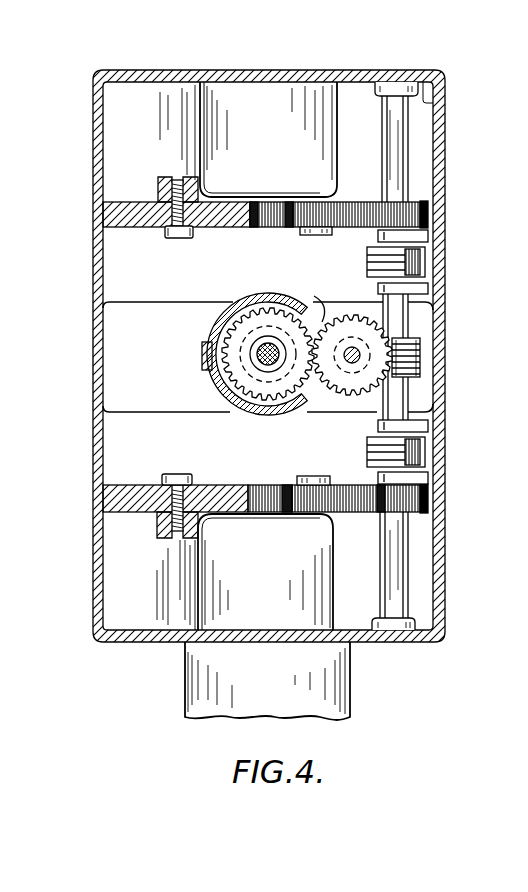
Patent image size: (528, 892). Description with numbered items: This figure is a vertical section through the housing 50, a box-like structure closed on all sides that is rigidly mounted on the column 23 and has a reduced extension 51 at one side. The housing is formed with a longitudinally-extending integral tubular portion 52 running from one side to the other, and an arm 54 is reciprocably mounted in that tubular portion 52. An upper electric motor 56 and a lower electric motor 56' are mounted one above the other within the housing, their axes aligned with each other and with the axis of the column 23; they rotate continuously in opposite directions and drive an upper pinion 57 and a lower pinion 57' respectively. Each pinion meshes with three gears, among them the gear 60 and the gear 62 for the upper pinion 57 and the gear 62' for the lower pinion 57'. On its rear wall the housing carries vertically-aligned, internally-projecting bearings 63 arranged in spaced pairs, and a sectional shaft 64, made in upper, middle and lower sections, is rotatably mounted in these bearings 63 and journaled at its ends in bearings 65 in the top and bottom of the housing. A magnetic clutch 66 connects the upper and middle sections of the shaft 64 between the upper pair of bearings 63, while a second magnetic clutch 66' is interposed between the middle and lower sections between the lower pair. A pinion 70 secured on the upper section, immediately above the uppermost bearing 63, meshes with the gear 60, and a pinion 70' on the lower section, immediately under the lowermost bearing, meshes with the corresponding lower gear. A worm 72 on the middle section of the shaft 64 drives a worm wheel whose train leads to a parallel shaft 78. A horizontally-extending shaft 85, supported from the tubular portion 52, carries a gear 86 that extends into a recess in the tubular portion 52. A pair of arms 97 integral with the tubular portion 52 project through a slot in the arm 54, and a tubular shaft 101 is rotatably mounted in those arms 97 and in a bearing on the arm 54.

The column 23 is at (330, 691).
The housing 50 is at (438, 404).
The reduced extension 51 is at (120, 345).
The tubular portion 52 is at (268, 414).
The arm 54 is at (253, 304).
The upper electric motor 56 is at (264, 139).
The lower electric motor 56' is at (263, 572).
The upper pinion 57 is at (265, 228).
The lower pinion 57' is at (270, 488).
The gear 60 is at (307, 224).
The gear 62 is at (176, 215).
The gear 62' is at (175, 500).
The bearings 63 is at (378, 238).
The sectional shaft 64 is at (392, 170).
The bearings 65 is at (380, 96).
The magnetic clutch 66 is at (376, 263).
The second magnetic clutch 66' is at (376, 452).
The pinion 70 is at (446, 205).
The pinion 70' is at (392, 512).
The worm 72 is at (422, 358).
The parallel shaft 78 is at (260, 374).
The horizontally-extending shaft 85 is at (362, 338).
The gear 86 is at (342, 388).
The arms 97 is at (316, 320).
The tubular shaft 101 is at (258, 349).